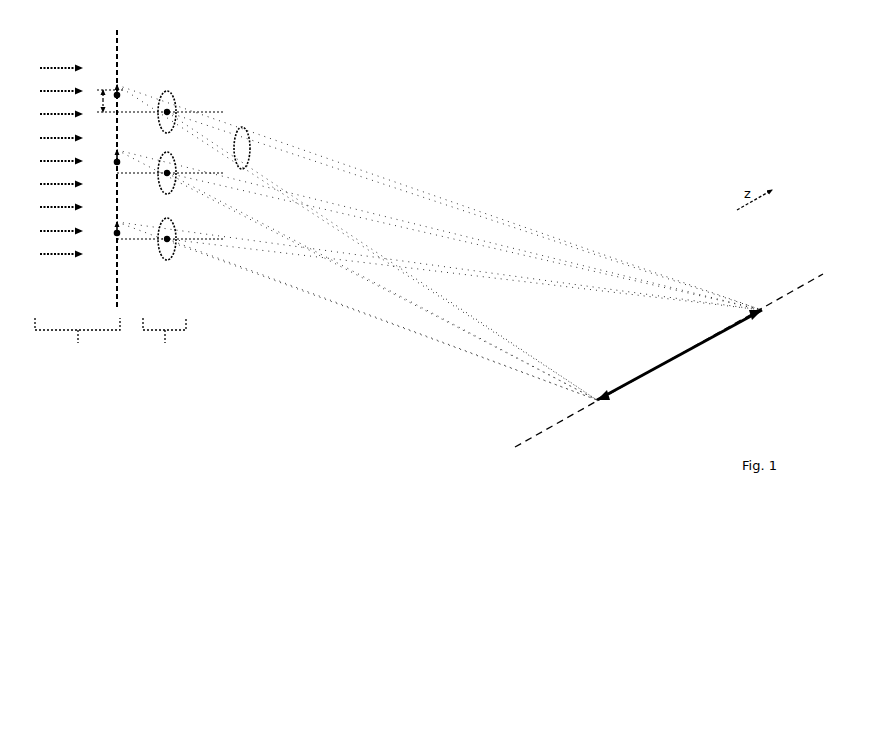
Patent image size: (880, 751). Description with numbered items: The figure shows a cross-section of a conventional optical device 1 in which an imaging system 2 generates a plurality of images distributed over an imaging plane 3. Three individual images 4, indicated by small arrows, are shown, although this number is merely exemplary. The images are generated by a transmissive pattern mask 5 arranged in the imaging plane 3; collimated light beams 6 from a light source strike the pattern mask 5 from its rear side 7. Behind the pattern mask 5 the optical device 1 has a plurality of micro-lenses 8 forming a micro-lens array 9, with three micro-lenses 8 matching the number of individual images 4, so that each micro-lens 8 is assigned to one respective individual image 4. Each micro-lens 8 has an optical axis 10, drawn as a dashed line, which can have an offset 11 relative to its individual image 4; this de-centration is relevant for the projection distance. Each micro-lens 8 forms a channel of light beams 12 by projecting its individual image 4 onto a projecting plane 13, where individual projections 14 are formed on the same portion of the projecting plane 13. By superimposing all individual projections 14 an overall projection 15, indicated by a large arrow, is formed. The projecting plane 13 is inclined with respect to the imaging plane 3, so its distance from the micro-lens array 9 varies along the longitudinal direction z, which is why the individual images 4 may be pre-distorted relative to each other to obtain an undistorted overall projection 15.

The optical device 1 is at (472, 66).
The imaging system 2 is at (77, 346).
The imaging plane 3 is at (137, 158).
The individual image 4 is at (122, 85).
The transmissive pattern mask 5 is at (118, 43).
The collimated light beams 6 is at (44, 66).
The rear side 7 is at (114, 157).
The micro-lens 8 is at (169, 90).
The micro-lens array 9 is at (164, 345).
The optical axis 10 is at (207, 109).
The offset 11 is at (98, 109).
The channel of light beams 12 is at (241, 130).
The projecting plane 13 is at (516, 444).
The individual projection 14 is at (679, 364).
The overall projection 15 is at (654, 376).